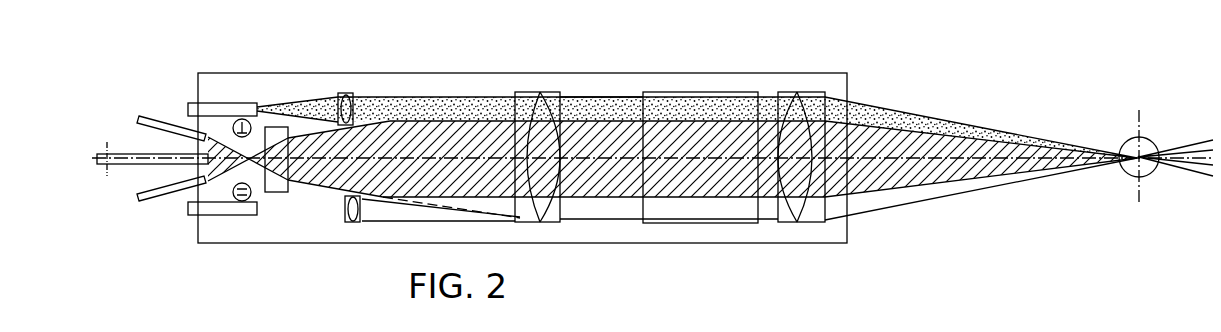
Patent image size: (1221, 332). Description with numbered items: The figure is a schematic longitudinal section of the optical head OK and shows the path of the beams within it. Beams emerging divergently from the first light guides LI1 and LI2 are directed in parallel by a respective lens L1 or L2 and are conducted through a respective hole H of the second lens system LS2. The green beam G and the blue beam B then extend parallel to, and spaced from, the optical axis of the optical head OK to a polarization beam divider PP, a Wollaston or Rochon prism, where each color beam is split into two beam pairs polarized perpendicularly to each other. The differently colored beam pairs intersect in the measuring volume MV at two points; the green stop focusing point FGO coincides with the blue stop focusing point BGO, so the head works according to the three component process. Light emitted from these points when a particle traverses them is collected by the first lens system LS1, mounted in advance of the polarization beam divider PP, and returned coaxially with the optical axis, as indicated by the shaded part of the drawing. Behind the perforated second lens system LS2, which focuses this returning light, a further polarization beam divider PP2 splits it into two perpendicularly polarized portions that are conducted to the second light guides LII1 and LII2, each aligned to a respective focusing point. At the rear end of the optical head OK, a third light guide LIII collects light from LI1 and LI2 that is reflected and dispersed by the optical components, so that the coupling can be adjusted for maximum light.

The optical head OK is at (407, 80).
The blue beam B is at (593, 207).
The third light guide LIII is at (122, 153).
The second light guide LII1 is at (148, 122).
The second light guide LII2 is at (157, 202).
The first light guide LI1 is at (217, 108).
The first light guide LI2 is at (222, 215).
The polarization beam divider PP2 is at (277, 128).
The lens L1 is at (340, 94).
The lens L2 is at (350, 222).
The second lens system LS2 is at (545, 100).
The hole H is at (517, 91).
The green beam G is at (593, 100).
The polarization beam divider PP is at (695, 125).
The first lens system LS1 is at (797, 107).
The green focusing point FGO is at (1130, 152).
The blue stop focusing point BGO is at (1138, 123).
The measuring volume MV is at (1150, 137).